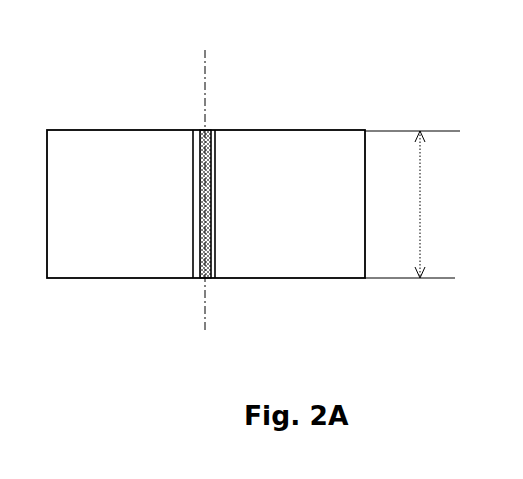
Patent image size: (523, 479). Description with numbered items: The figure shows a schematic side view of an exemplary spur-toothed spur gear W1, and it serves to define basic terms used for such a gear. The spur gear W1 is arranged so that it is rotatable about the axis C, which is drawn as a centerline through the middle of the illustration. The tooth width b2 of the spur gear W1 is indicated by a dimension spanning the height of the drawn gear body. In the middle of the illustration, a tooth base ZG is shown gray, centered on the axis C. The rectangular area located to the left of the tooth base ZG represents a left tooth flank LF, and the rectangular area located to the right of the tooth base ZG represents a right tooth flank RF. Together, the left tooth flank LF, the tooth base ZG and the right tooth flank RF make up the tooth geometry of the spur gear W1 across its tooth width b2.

The spur gear W1 is at (76, 73).
The axis C is at (205, 177).
The left tooth flank LF is at (195, 135).
The right tooth flank RF is at (215, 135).
The tooth base ZG is at (207, 272).
The tooth width b2 is at (412, 204).